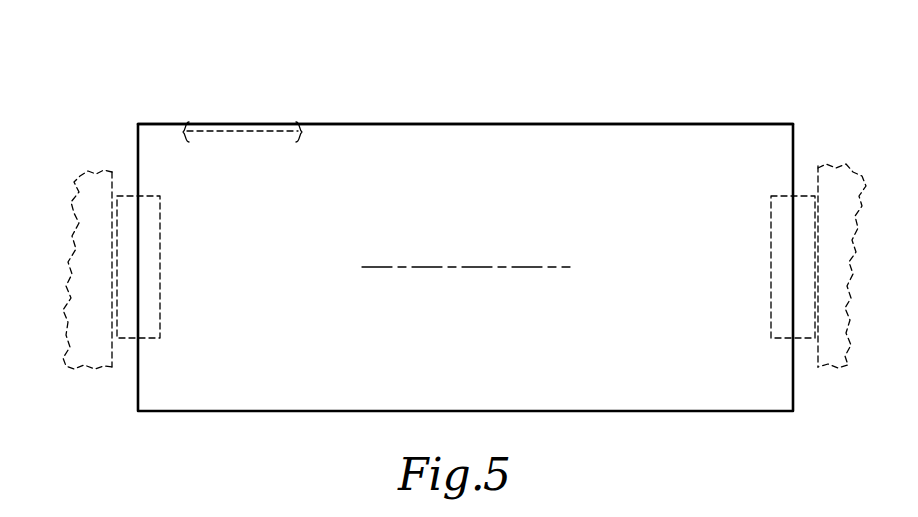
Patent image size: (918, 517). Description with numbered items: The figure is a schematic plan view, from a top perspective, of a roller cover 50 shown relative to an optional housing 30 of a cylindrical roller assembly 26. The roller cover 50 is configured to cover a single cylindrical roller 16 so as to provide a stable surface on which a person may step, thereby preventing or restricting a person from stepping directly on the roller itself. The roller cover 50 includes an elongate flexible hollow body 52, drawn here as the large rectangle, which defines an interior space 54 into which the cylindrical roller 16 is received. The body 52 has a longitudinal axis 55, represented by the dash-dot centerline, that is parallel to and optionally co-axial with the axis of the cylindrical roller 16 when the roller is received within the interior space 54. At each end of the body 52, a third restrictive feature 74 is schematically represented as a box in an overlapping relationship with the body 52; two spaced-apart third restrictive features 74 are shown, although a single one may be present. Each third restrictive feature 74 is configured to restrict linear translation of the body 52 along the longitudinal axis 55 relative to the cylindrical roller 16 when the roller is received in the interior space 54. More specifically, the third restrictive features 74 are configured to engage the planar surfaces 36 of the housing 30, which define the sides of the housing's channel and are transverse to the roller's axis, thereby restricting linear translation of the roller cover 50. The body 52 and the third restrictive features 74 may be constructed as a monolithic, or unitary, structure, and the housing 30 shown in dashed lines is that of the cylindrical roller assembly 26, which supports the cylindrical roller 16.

The roller cover 50 is at (678, 58).
The elongate flexible hollow body 52 is at (520, 124).
The interior space 54 is at (403, 160).
The cylindrical roller 16 is at (264, 131).
The longitudinal axis 55 is at (440, 270).
The third restrictive feature 74 is at (160, 272).
The planar surfaces 36 is at (112, 182).
The housing 30 is at (66, 235).
The cylindrical roller assembly 26 is at (83, 148).